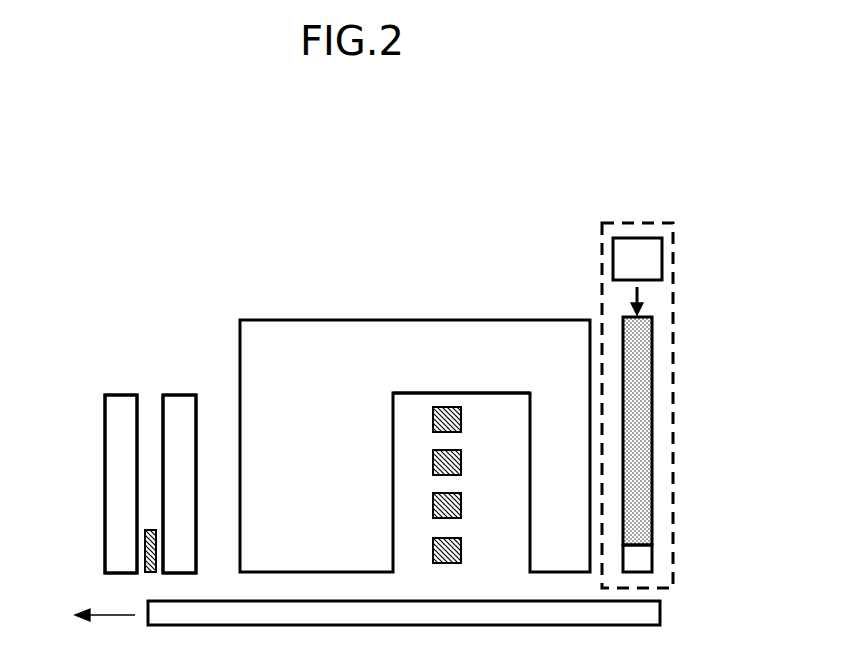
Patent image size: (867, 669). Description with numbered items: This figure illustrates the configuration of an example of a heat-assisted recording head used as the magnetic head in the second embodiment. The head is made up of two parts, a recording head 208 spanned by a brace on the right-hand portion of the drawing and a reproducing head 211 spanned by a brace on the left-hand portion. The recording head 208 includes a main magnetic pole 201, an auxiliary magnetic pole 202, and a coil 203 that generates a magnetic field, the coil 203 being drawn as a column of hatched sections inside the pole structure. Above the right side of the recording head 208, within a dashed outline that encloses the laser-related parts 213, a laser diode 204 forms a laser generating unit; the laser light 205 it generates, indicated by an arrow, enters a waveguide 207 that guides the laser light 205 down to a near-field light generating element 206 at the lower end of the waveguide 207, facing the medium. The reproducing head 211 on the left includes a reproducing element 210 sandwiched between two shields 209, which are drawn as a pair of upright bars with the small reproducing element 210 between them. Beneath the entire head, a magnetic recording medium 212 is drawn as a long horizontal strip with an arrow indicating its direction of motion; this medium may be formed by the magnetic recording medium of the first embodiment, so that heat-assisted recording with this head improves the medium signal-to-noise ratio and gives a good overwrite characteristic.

The main magnetic pole 201 is at (558, 518).
The auxiliary magnetic pole 202 is at (355, 493).
The coil 203 is at (458, 413).
The laser diode 204 is at (650, 255).
The laser light 205 is at (645, 293).
The near-field light generating element 206 is at (645, 560).
The waveguide 207 is at (638, 355).
The recording head 208 is at (235, 208).
The shields 209 is at (123, 400).
The reproducing element 210 is at (145, 552).
The reproducing head 211 is at (85, 318).
The magnetic recording medium 212 is at (650, 613).
The gas supply unit 213 is at (600, 253).